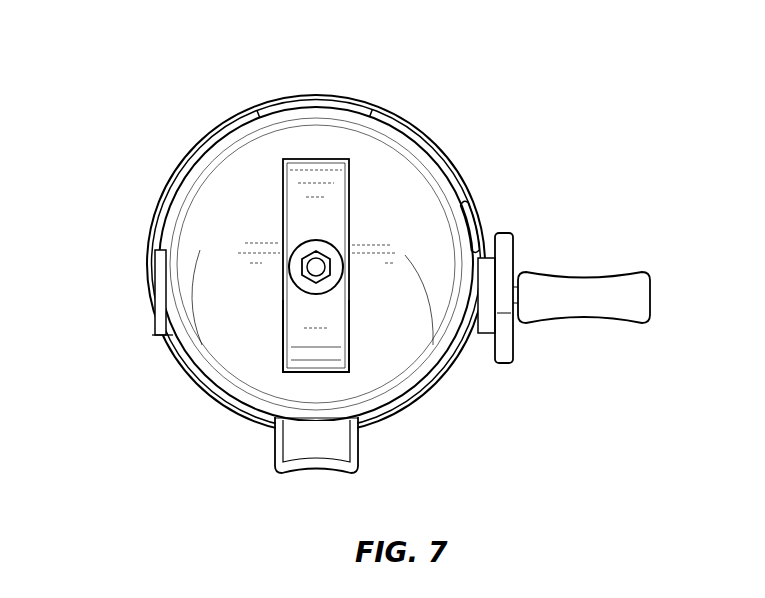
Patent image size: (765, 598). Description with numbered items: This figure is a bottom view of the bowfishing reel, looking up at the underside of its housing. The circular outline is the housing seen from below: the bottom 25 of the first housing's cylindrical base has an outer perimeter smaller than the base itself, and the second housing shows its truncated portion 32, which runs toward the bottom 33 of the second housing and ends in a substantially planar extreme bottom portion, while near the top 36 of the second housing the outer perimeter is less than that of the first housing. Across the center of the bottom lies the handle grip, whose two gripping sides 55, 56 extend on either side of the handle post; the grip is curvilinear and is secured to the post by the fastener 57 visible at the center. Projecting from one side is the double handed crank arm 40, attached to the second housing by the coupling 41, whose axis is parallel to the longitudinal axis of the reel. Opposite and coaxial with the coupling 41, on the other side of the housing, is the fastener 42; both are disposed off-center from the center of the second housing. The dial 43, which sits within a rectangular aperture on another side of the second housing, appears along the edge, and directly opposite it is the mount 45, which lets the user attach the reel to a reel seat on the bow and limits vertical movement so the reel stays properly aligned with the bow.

The bottom 25 is at (172, 182).
The truncated portion 32 is at (237, 195).
The bottom 33 is at (403, 358).
The top 36 is at (160, 225).
The double handed crank arm 40 is at (522, 253).
The coupling 41 is at (487, 318).
The fastener 42 is at (156, 327).
The dial 43 is at (313, 106).
The mount 45 is at (288, 478).
The gripping side 55 is at (327, 175).
The gripping side 56 is at (300, 350).
The fastener 57 is at (323, 258).